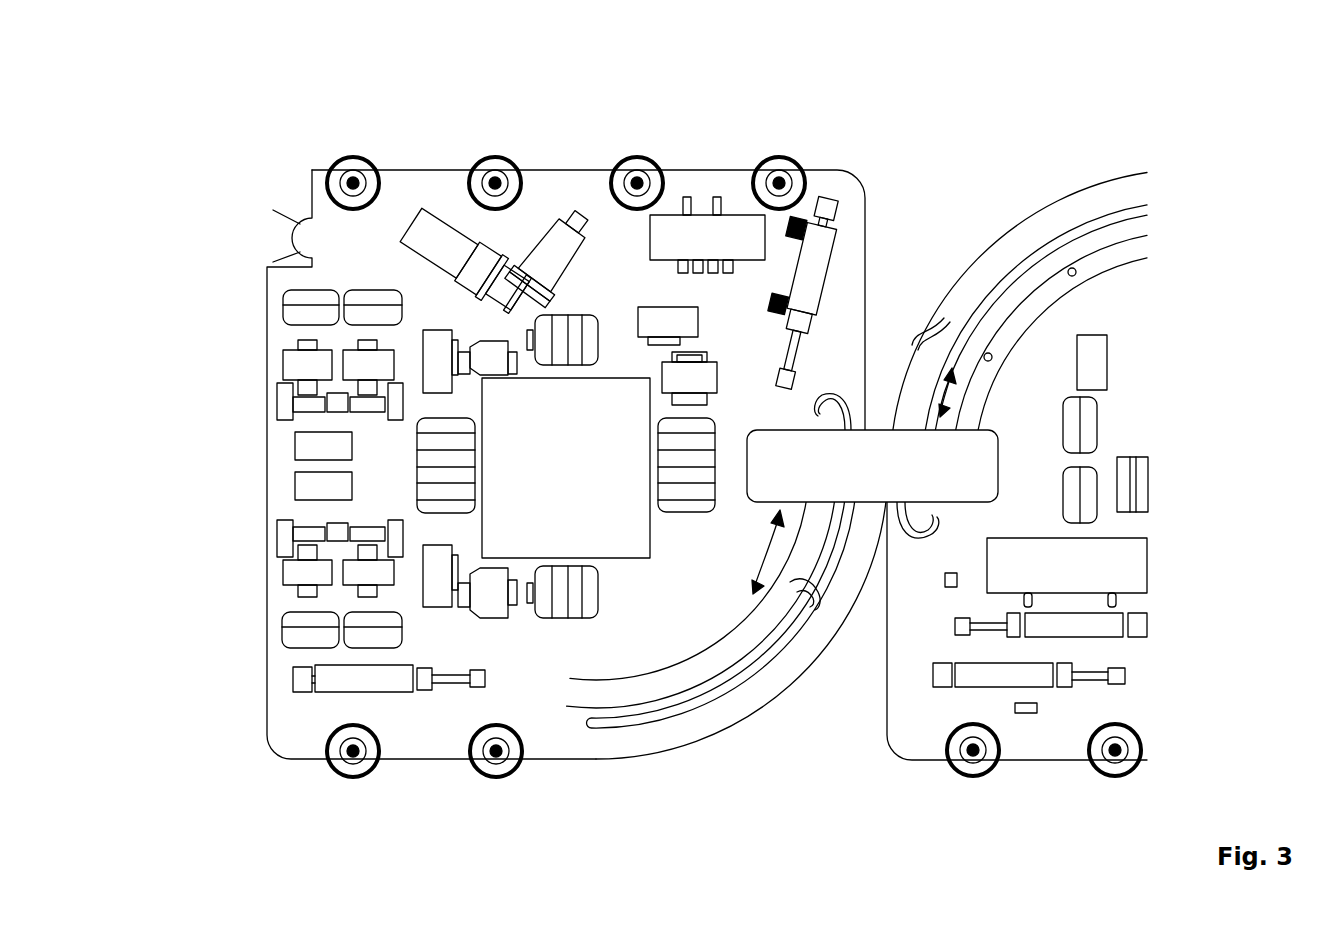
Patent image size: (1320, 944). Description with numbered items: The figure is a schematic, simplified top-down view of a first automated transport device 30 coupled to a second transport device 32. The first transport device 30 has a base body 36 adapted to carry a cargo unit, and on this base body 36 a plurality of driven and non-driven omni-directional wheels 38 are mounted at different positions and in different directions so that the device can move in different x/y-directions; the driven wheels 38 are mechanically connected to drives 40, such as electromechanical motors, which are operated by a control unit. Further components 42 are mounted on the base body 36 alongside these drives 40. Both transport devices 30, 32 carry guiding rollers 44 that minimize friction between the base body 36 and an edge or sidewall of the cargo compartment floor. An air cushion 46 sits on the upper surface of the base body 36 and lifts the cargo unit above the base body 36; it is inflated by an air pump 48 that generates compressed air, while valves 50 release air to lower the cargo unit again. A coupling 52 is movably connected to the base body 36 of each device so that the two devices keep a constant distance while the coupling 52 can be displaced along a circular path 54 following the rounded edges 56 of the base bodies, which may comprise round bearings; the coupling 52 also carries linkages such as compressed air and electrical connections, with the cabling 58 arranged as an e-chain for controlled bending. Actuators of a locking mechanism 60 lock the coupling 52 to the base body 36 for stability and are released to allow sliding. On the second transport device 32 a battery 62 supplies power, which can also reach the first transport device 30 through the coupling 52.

The transport device 30 is at (285, 148).
The second transport device 32 is at (1157, 128).
The base body 36 is at (555, 748).
The omni-directional wheels 38 is at (297, 315).
The drives 40 is at (300, 368).
The electronic component 42 is at (305, 443).
The guiding rollers 44 is at (358, 157).
The air cushion 46 is at (620, 537).
The air pump 48 is at (433, 232).
The valves 50 is at (703, 228).
The coupling 52 is at (883, 493).
The circular path 54 is at (948, 390).
The rounded edges 56 is at (1048, 152).
The cabling 58 is at (980, 305).
The locking mechanism actuators 60 is at (835, 248).
The battery 62 is at (1135, 562).